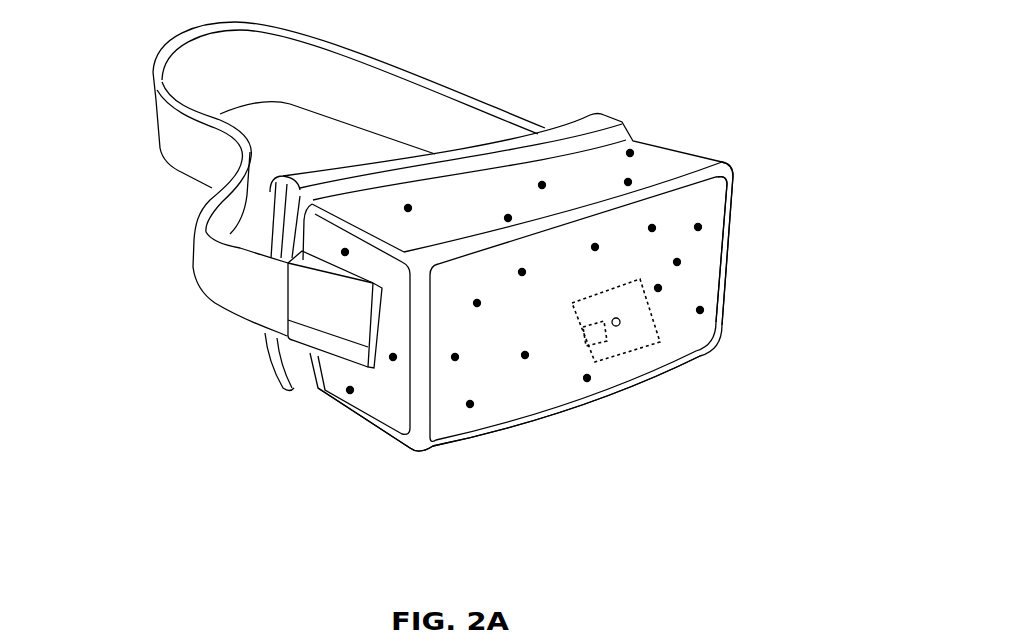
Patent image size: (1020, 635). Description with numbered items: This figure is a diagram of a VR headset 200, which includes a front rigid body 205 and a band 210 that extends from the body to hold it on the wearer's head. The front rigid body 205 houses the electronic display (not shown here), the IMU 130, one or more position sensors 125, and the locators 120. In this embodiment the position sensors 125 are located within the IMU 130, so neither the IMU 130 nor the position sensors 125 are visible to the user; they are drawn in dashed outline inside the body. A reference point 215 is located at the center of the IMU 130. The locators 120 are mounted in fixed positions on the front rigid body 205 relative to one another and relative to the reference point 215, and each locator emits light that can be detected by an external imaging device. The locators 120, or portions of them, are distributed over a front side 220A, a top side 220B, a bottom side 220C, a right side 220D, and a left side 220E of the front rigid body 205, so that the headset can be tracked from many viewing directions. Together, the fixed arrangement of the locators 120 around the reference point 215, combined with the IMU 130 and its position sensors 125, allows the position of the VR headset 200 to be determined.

The VR headset 200 is at (40, 21).
The front rigid body 205 is at (733, 172).
The band 210 is at (447, 83).
The front side 220A is at (459, 424).
The top side 220B is at (383, 210).
The bottom side 220C is at (344, 428).
The right side 220D is at (385, 391).
The left side 220E is at (707, 147).
The locators 120 is at (709, 300).
The position sensors 125 is at (597, 342).
The IMU 130 is at (662, 337).
The reference point 215 is at (617, 327).